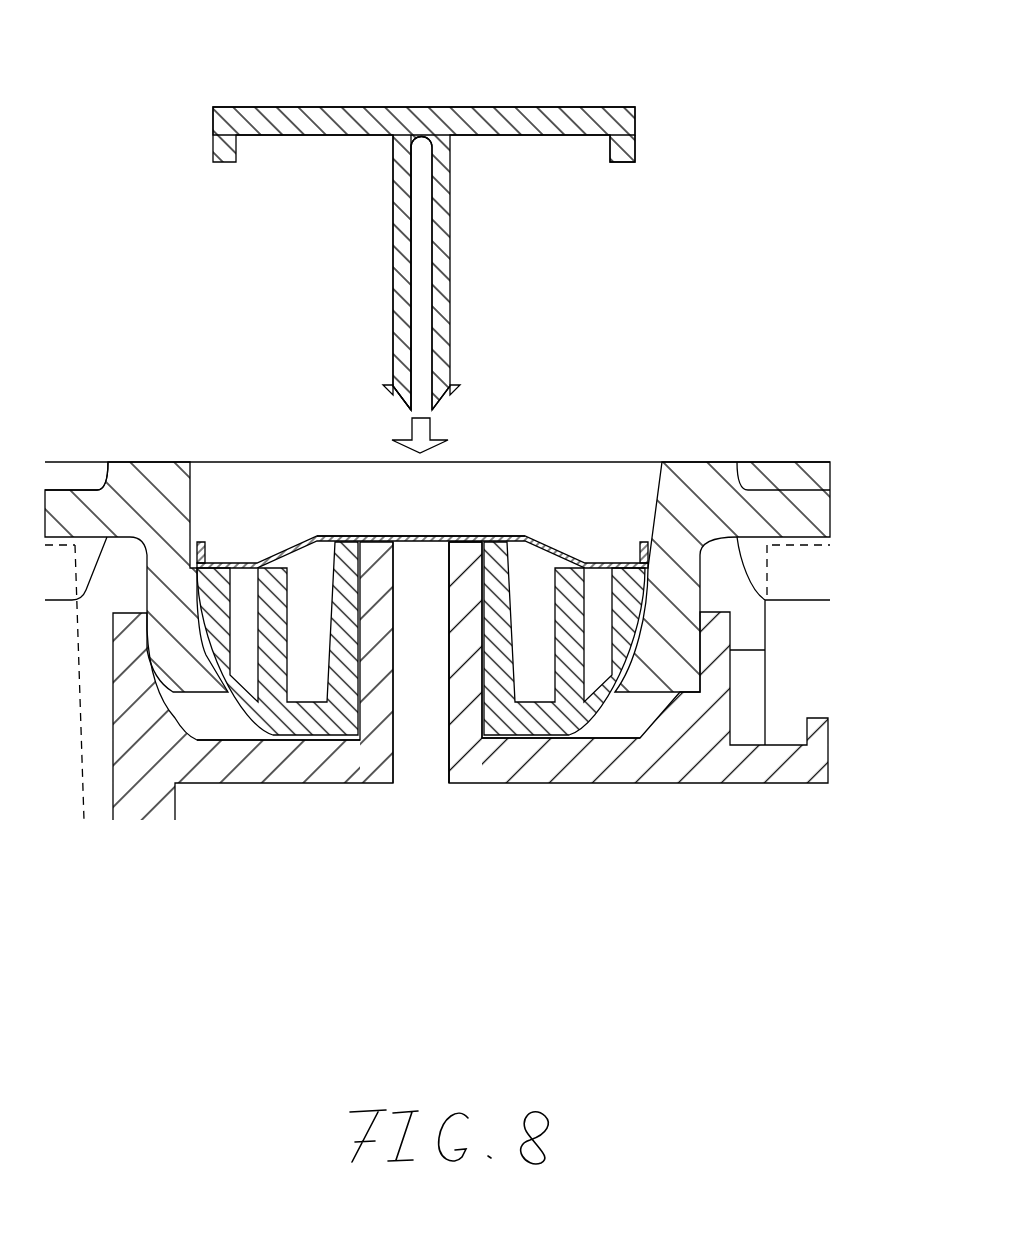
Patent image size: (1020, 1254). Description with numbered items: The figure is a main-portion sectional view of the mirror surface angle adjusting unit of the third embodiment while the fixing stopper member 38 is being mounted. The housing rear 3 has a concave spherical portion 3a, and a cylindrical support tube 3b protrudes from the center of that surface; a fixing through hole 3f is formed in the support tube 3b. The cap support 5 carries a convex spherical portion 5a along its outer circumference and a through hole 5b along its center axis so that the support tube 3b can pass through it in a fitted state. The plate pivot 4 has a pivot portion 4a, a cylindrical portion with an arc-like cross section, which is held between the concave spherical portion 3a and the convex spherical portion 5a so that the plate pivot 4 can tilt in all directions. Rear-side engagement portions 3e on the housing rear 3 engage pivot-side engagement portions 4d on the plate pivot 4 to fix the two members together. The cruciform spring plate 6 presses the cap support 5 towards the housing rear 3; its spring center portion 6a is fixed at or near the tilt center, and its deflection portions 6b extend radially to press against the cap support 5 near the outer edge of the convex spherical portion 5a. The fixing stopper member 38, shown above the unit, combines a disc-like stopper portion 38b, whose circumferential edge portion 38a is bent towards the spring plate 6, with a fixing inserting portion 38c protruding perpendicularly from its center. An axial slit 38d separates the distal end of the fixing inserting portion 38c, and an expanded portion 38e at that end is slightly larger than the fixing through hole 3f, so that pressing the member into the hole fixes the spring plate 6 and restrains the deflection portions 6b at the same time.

The fixing stopper member 38 is at (598, 98).
The circumferential edge portion 38a is at (622, 162).
The stopper portion 38b is at (305, 107).
The fixing inserting portion 38c is at (393, 233).
The slit 38d is at (432, 263).
The expanded portion 38e is at (455, 390).
The plate pivot 4 is at (152, 462).
The pivot portion 4a is at (150, 635).
The pivot-side engagement portions 4d is at (77, 490).
The housing rear 3 is at (113, 725).
The concave spherical portion 3a is at (205, 745).
The support tube 3b is at (482, 605).
The rear-side engagement portions 3e is at (800, 660).
The fixing through hole 3f is at (448, 720).
The cap support 5 is at (421, 609).
The convex spherical portion 5a is at (260, 713).
The through hole 5b is at (487, 645).
The spring plate 6 is at (282, 538).
The spring center portion 6a is at (378, 536).
The deflection portions 6b is at (215, 540).